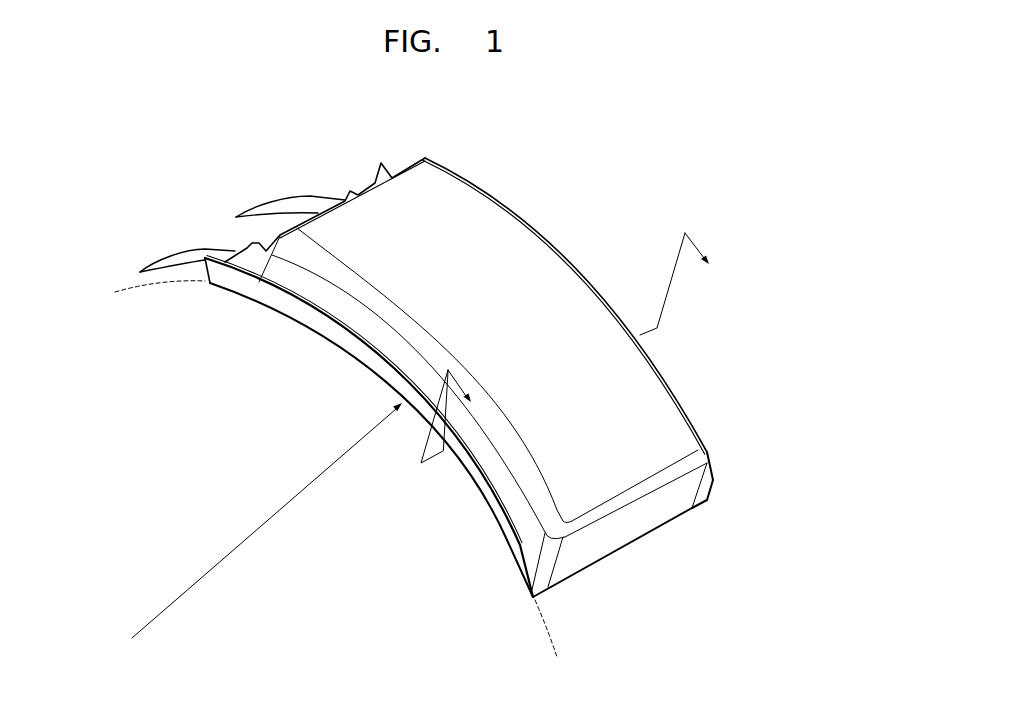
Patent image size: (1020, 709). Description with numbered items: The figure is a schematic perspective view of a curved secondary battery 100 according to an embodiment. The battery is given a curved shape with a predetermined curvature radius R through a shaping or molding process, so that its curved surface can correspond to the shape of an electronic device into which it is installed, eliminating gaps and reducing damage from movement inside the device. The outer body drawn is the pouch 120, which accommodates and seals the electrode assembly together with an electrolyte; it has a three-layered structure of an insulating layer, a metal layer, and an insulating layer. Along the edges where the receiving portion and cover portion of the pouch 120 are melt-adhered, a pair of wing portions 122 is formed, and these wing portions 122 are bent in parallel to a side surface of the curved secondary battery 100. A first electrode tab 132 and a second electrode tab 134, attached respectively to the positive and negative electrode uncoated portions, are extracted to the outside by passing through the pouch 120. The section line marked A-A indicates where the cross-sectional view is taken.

The curved secondary battery 100 is at (767, 159).
The pouch 120 is at (563, 287).
The wing portions 122 is at (708, 470).
The first electrode tab 132 is at (280, 200).
The second electrode tab 134 is at (168, 252).